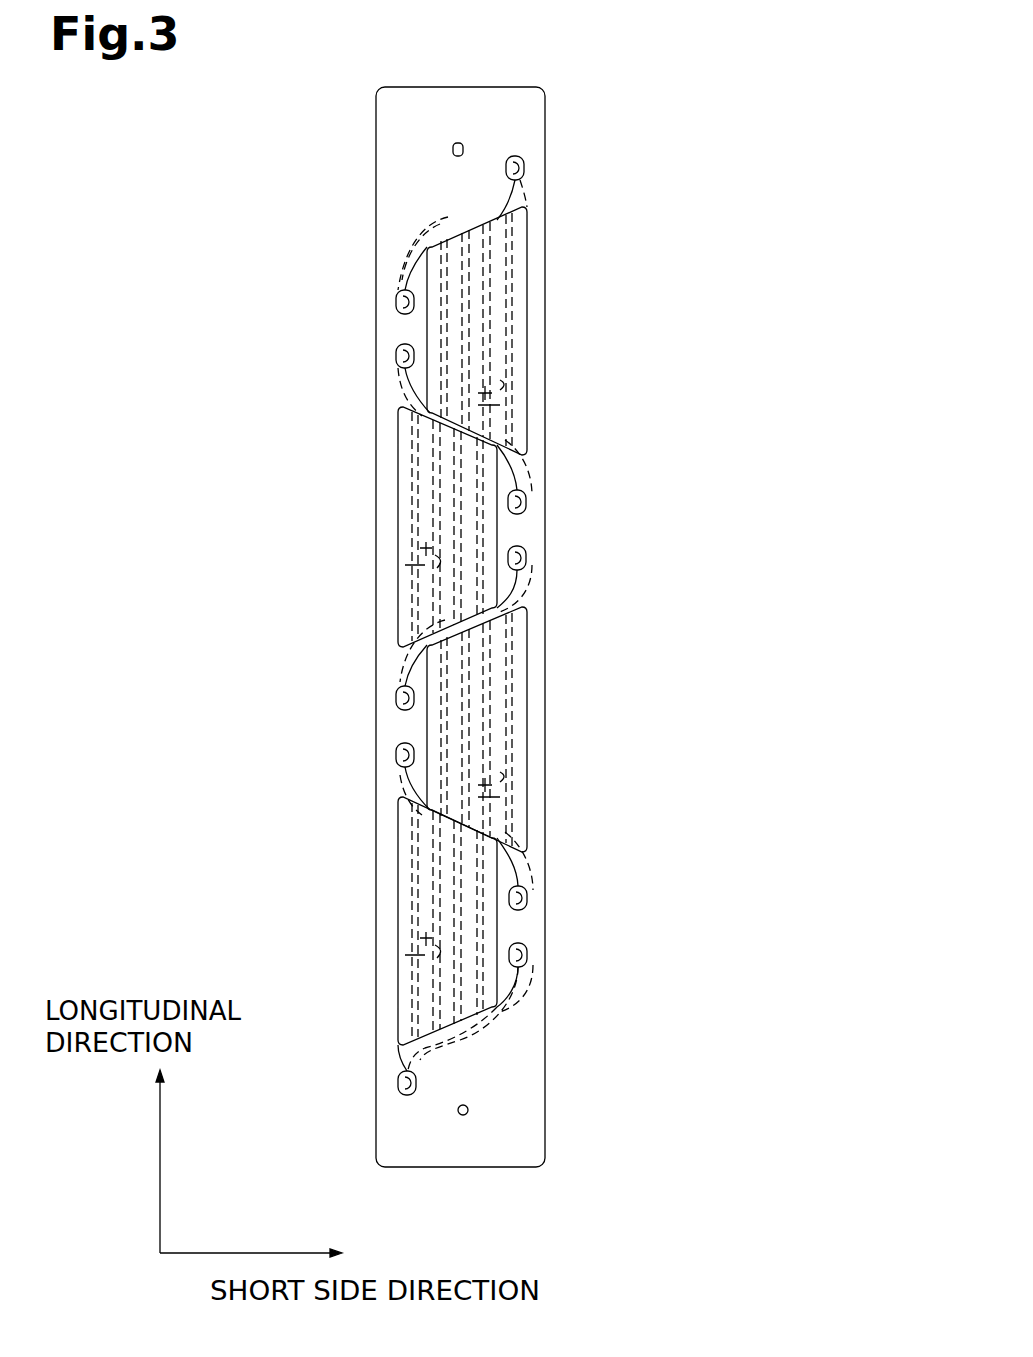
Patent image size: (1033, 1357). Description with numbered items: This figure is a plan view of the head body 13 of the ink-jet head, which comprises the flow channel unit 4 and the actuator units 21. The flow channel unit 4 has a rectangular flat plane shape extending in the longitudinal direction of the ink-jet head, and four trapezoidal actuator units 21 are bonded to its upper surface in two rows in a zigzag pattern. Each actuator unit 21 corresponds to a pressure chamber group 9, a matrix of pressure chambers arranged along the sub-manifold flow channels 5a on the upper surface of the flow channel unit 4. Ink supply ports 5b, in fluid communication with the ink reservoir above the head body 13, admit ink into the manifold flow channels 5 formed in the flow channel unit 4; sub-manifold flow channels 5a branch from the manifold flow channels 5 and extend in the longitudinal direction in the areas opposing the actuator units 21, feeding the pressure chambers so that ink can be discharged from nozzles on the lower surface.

The head body 13 is at (608, 98).
The flow channel unit 4 is at (522, 132).
The manifold flow channel 5 is at (430, 218).
The sub-manifold flow channel 5a is at (485, 405).
The ink supply port 5b is at (525, 176).
The pressure chamber group 9 is at (538, 263).
The actuator unit 21 is at (528, 327).